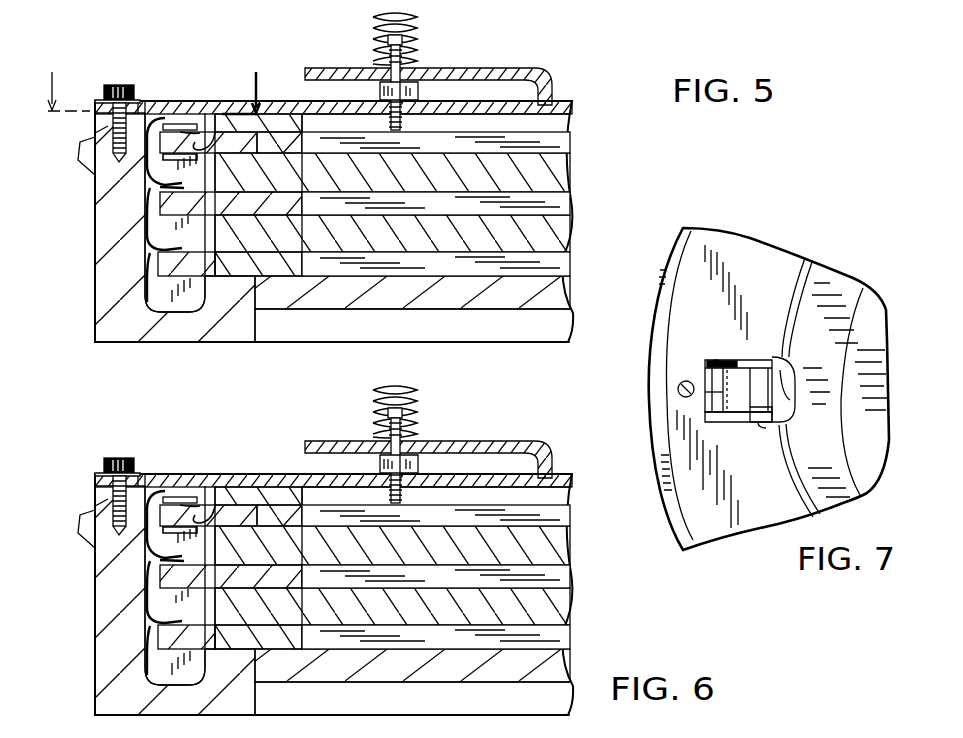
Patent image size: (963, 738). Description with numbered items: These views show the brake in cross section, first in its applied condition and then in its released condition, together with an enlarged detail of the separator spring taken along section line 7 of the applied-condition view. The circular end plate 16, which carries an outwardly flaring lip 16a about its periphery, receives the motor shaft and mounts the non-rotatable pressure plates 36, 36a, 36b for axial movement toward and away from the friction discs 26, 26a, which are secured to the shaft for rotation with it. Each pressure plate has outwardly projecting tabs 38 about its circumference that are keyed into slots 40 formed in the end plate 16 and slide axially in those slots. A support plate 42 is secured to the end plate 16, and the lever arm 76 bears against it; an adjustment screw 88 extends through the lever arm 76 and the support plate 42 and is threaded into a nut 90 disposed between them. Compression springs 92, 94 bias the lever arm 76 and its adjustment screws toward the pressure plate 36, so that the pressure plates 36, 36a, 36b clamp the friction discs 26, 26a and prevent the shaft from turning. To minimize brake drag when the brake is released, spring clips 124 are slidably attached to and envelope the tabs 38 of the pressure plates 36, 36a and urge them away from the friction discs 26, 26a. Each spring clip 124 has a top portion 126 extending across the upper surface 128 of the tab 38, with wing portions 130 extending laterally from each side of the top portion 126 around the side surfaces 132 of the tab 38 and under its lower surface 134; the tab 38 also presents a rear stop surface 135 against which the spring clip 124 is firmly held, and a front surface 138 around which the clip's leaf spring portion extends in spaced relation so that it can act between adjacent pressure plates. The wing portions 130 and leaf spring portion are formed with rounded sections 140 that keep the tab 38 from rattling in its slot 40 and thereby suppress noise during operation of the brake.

In FIG. 5, the section line 7— 7 is at (152, 81).
In FIG. 5, the end plate 16 is at (108, 262).
In FIG. 6, the end plate 16 is at (334, 594).
In FIG. 7, the end plate 16 is at (752, 243).
In FIG. 5, the outwardly flaring lip 16a is at (92, 148).
In FIG. 6, the outwardly flaring lip 16a is at (75, 523).
In FIG. 5, the friction disc 26 is at (305, 157).
In FIG. 6, the friction disc 26 is at (364, 550).
In FIG. 5, the friction disc 26a is at (258, 247).
In FIG. 6, the friction disc 26a is at (412, 667).
In FIG. 5, the pressure plate 36 is at (147, 124).
In FIG. 6, the pressure plate 36 is at (123, 517).
In FIG. 7, the pressure plate 36 is at (830, 282).
In FIG. 5, the pressure plate 36a is at (147, 208).
In FIG. 6, the pressure plate 36a is at (114, 592).
In FIG. 5, the pressure plate 36b is at (150, 284).
In FIG. 6, the pressure plate 36b is at (96, 650).
In FIG. 7, the outwardly projecting tab 38 is at (727, 413).
In FIG. 7, the slot 40 is at (714, 360).
In FIG. 5, the support plate 42 is at (142, 101).
In FIG. 5, the lever arm 76 is at (492, 68).
In FIG. 6, the lever arm 76 is at (428, 426).
In FIG. 5, the adjustment screw 88 is at (402, 48).
In FIG. 6, the adjustment screw 88 is at (424, 451).
In FIG. 5, the nut 90 is at (418, 90).
In FIG. 6, the nut 90 is at (422, 466).
In FIG. 5, the compression spring 92 is at (420, 18).
In FIG. 6, the compression spring 92 is at (414, 401).
In FIG. 5, the compression spring 94 is at (510, 1).
In FIG. 5, the spring clip 124 is at (158, 188).
In FIG. 6, the spring clip 124 is at (112, 566).
In FIG. 7, the spring clip 124 is at (720, 392).
In FIG. 5, the top portion 126 is at (172, 124).
In FIG. 6, the top portion 126 is at (168, 463).
In FIG. 7, the top portion 126 is at (740, 383).
In FIG. 5, the upper surface 128 is at (186, 124).
In FIG. 6, the upper surface 128 is at (186, 483).
In FIG. 5, the wing portion 130 is at (252, 163).
In FIG. 6, the wing portion 130 is at (392, 536).
In FIG. 7, the wing portion 130 is at (760, 362).
In FIG. 7, the side surface 132 is at (758, 425).
In FIG. 5, the lower surface 134 is at (214, 134).
In FIG. 6, the lower surface 134 is at (217, 486).
In FIG. 7, the rear stop surface 135 is at (778, 388).
In FIG. 5, the front surface 138 is at (104, 94).
In FIG. 6, the front surface 138 is at (112, 484).
In FIG. 6, the rounded section 140 is at (95, 628).